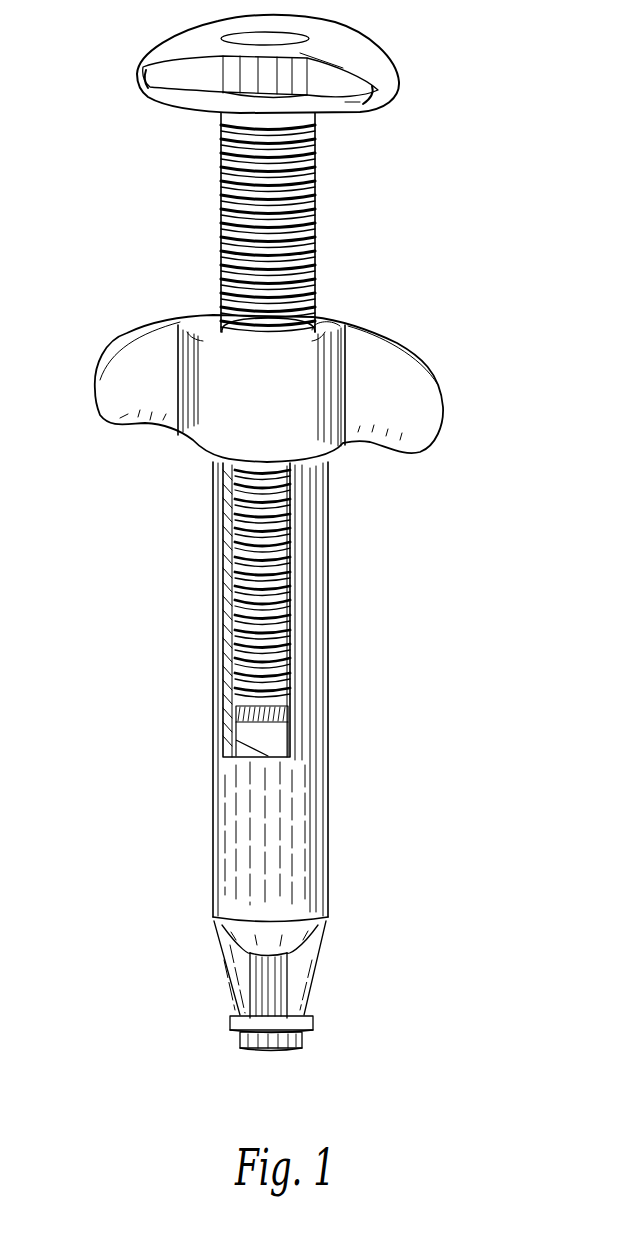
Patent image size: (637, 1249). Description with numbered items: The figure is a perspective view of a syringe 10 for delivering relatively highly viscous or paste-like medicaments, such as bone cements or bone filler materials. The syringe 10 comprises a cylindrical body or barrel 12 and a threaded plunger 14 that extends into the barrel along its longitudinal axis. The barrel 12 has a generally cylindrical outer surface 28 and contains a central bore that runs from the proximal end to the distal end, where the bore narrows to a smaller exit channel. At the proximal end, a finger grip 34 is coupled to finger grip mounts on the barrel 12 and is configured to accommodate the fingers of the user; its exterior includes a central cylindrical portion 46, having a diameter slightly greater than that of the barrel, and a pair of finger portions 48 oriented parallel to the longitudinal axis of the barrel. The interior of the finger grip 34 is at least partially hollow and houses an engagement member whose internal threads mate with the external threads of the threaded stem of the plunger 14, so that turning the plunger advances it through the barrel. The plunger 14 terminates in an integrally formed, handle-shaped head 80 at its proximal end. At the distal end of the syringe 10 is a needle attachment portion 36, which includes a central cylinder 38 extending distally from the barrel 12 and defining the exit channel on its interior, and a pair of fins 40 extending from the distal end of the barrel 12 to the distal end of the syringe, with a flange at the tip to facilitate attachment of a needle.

The syringe 10 is at (88, 162).
The barrel 12 is at (298, 785).
The threaded plunger 14 is at (318, 204).
The outer surface 28 is at (297, 840).
The finger grip 34 is at (281, 409).
The needle attachment portion 36 is at (272, 1052).
The central cylinder 38 is at (277, 988).
The fins 40 is at (237, 970).
The central cylindrical portion 46 is at (240, 413).
The finger portions 48 is at (134, 363).
The head 80 is at (383, 107).